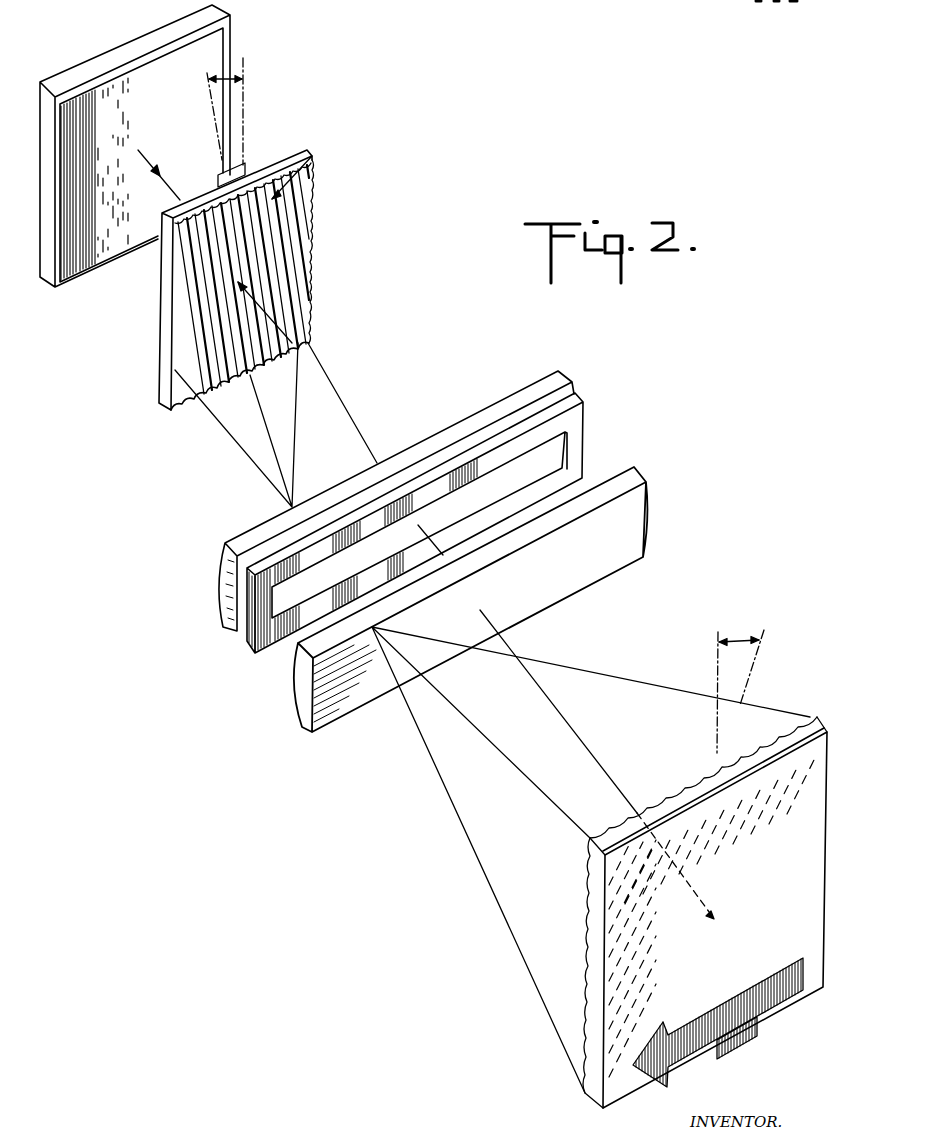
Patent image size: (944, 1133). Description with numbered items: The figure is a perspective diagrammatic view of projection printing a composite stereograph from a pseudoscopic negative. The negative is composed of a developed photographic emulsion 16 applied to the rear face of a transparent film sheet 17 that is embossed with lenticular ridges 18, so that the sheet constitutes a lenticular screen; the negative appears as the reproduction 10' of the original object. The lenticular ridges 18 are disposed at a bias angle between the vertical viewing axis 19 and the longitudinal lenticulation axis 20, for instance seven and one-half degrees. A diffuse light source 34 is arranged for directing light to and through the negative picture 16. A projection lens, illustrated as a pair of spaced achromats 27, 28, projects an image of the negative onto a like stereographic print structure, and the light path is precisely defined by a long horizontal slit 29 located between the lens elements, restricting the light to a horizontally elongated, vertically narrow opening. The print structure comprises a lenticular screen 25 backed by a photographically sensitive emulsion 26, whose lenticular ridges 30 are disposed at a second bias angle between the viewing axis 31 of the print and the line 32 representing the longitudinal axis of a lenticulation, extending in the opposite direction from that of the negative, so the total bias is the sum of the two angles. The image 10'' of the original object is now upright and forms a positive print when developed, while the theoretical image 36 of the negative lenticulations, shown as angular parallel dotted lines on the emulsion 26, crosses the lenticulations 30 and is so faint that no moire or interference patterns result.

The diffuse light source 34 is at (215, 40).
The longitudinal lenticulation axis 20 is at (250, 108).
The vertical viewing axis 19 is at (217, 120).
The photographic emulsion 16 is at (293, 157).
The transparent film sheet 17 is at (308, 155).
The reproduction 10' is at (175, 175).
The lenticular ridges 18 is at (292, 343).
The achromat 27 is at (218, 612).
The slit 29 is at (550, 455).
The achromat 28 is at (302, 724).
The lenticular ridges 30 is at (698, 774).
The lenticular screen 25 is at (815, 717).
The photographically sensitive emulsion 26 is at (829, 730).
The viewing axis 31 is at (716, 710).
The longitudinal axis of a lenticulation 32 is at (755, 673).
The image of the negative lenticulations 36 is at (759, 891).
The image of the original object 10'' is at (718, 1027).